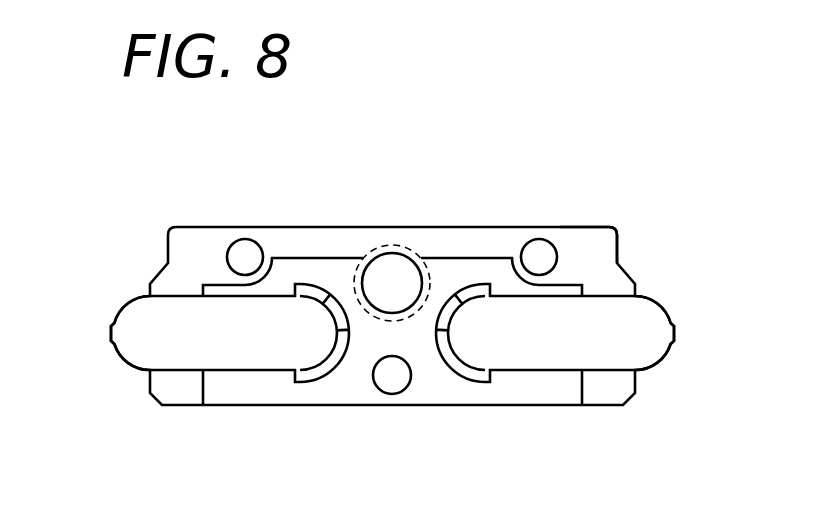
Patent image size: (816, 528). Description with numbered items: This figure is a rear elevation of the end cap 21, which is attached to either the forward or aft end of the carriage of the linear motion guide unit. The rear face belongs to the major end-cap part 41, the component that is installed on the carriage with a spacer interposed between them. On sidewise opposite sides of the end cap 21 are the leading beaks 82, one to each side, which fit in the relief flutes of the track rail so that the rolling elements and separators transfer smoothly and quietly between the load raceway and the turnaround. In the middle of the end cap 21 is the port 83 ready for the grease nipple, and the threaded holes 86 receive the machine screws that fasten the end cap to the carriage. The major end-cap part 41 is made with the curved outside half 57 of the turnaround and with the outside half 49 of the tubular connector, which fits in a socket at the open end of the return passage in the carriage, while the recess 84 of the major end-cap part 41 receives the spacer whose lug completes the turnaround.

The end cap 21 is at (507, 222).
The major end-cap part 41 is at (605, 252).
The outside half of the tubular connector 49 is at (318, 383).
The curved outside half of the turnaround 57 is at (245, 352).
The leading beak 82 is at (112, 325).
The port 83 is at (385, 270).
The recess 84 is at (203, 384).
The threaded holes 86 is at (244, 252).